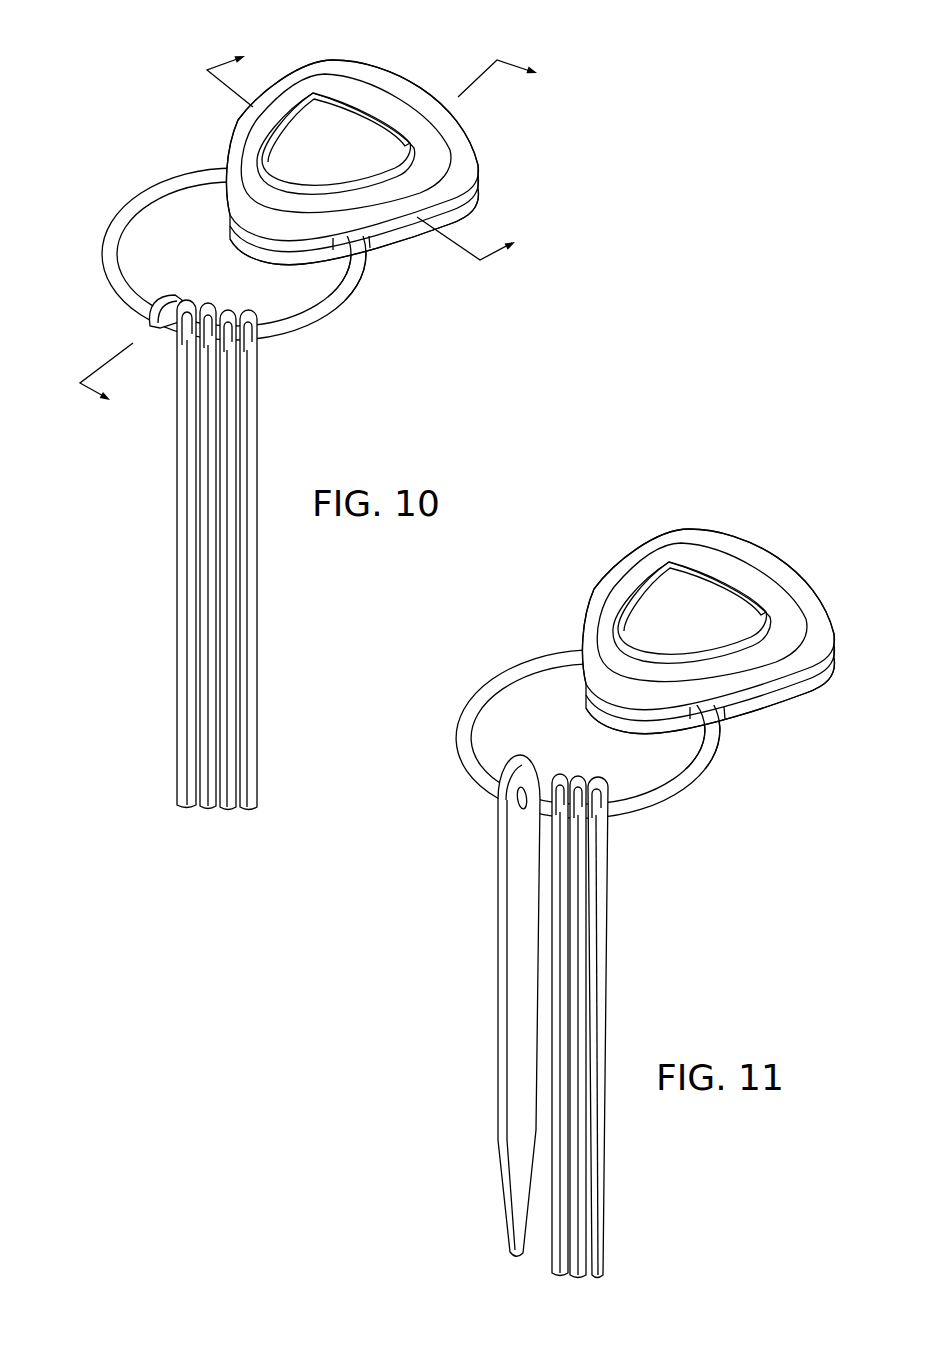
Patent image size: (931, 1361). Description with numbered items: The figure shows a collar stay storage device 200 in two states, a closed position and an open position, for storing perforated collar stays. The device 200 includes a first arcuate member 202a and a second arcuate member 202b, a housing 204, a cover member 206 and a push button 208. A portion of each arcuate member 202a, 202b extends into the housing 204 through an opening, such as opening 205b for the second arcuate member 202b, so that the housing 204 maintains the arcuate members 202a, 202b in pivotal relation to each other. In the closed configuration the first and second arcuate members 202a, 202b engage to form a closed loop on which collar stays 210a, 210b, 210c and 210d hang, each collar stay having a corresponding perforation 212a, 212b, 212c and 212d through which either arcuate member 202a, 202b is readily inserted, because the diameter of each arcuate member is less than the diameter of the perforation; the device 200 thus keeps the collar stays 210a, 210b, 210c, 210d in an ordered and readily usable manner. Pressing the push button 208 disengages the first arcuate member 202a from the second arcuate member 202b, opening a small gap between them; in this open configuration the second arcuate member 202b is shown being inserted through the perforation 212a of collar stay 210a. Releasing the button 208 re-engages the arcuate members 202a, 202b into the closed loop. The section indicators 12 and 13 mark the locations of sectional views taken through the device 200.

In FIG. 10, the collar stay storage device 200 is at (343, 27).
In FIG. 10, the first arcuate member 202a is at (115, 218).
In FIG. 11, the first arcuate member 202a is at (463, 692).
In FIG. 10, the second arcuate member 202b is at (342, 331).
In FIG. 11, the second arcuate member 202b is at (662, 801).
In FIG. 10, the housing 204 is at (470, 182).
In FIG. 11, the housing 204 is at (724, 689).
In FIG. 10, the opening 205b is at (368, 242).
In FIG. 11, the opening 205b is at (621, 734).
In FIG. 10, the cover member 206 is at (458, 150).
In FIG. 11, the cover member 206 is at (722, 631).
In FIG. 10, the push button 208 is at (340, 153).
In FIG. 11, the push button 208 is at (692, 612).
In FIG. 10, the collar stay 210a is at (147, 528).
In FIG. 11, the collar stay 210a is at (491, 980).
In FIG. 10, the collar stay 210b is at (216, 569).
In FIG. 11, the collar stay 210b is at (532, 1009).
In FIG. 10, the collar stay 210c is at (229, 812).
In FIG. 11, the collar stay 210c is at (624, 1038).
In FIG. 10, the collar stay 210d is at (289, 578).
In FIG. 11, the collar stay 210d is at (642, 1037).
In FIG. 10, the perforation 212a is at (143, 304).
In FIG. 11, the perforation 212a is at (513, 758).
In FIG. 10, the perforation 212b is at (205, 302).
In FIG. 11, the perforation 212b is at (565, 774).
In FIG. 10, the perforation 212c is at (232, 308).
In FIG. 11, the perforation 212c is at (587, 779).
In FIG. 10, the perforation 212d is at (256, 323).
In FIG. 11, the perforation 212d is at (608, 790).
In FIG. 10, the section line 12- 12 is at (334, 243).
In FIG. 10, the section line 13- 13 is at (387, 148).